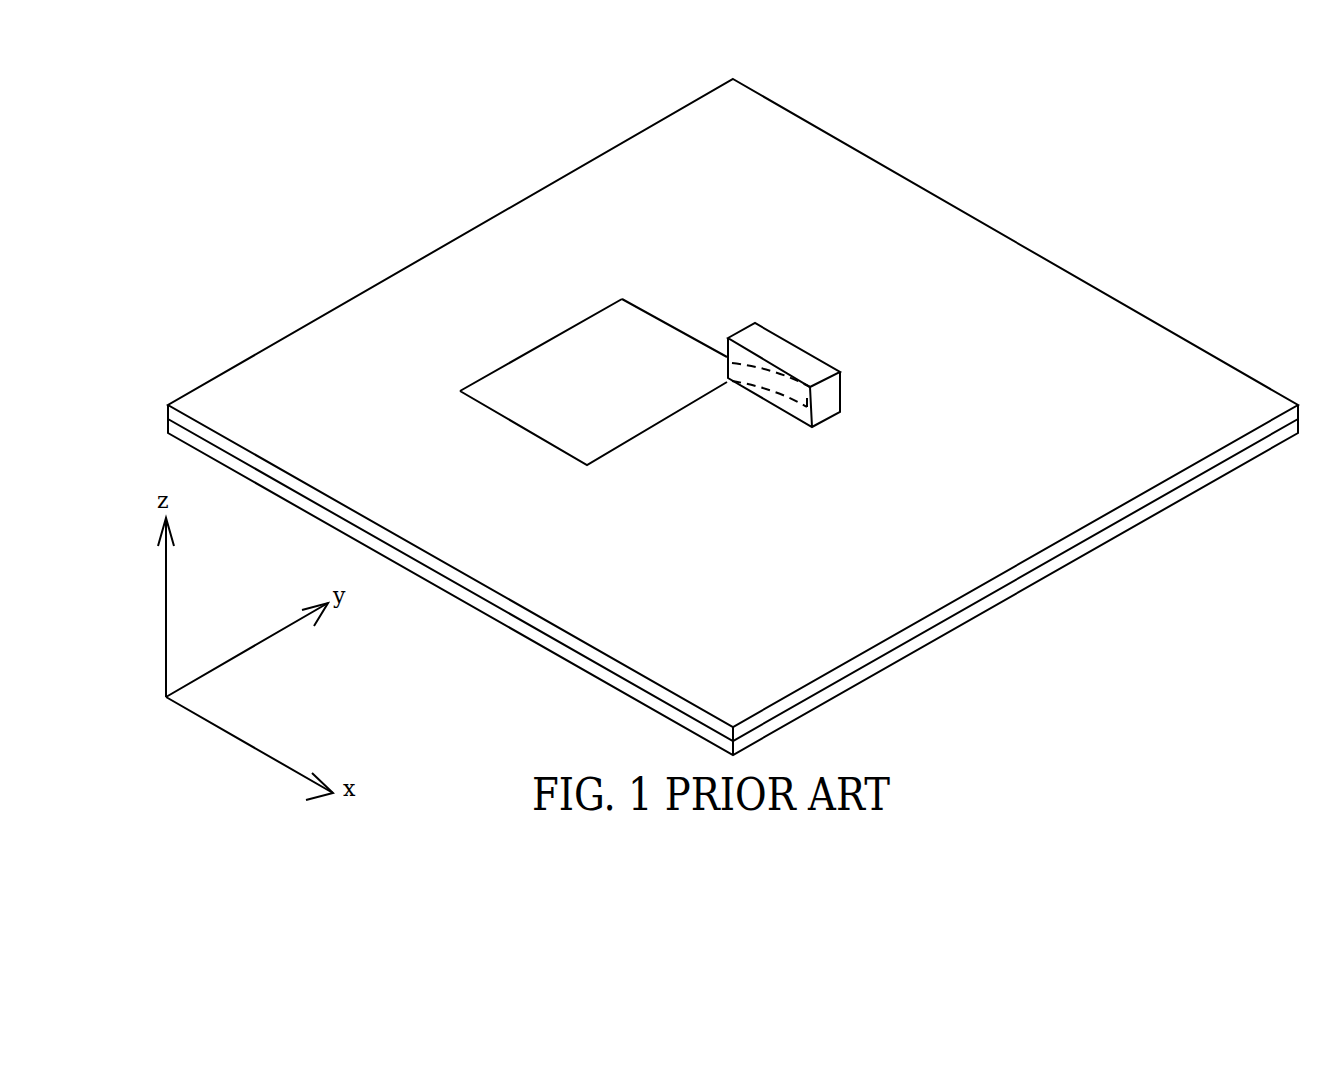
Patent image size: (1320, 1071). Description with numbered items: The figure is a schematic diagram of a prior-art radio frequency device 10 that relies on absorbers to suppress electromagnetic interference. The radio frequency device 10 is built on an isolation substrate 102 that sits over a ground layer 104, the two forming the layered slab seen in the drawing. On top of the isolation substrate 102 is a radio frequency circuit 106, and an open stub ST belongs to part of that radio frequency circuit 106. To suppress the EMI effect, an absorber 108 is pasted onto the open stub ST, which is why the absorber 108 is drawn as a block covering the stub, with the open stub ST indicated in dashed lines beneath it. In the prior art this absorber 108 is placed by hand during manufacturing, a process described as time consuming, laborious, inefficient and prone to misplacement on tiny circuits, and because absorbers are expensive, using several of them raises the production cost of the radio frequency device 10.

The radio frequency device 10 is at (1092, 160).
The isolation substrate 102 is at (1130, 338).
The ground layer 104 is at (1192, 485).
The radio frequency circuit 106 is at (530, 378).
The absorber 108 is at (808, 372).
The open stub ST is at (777, 383).